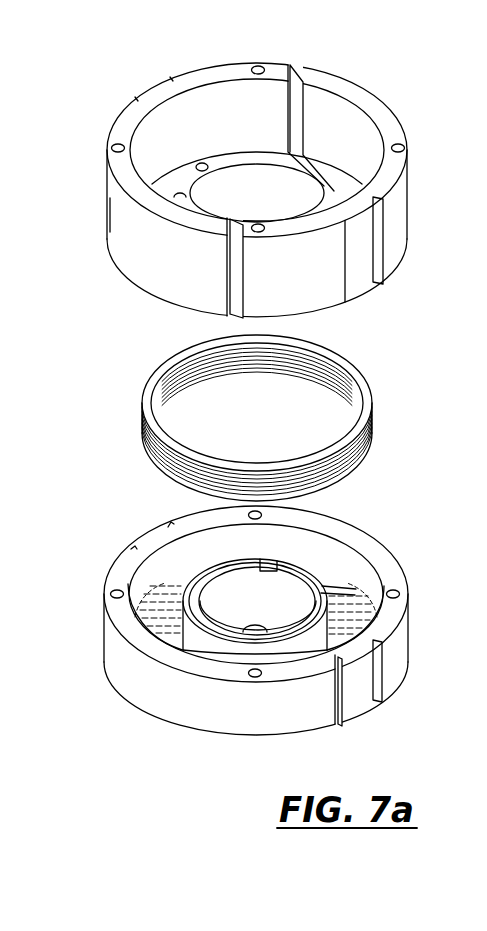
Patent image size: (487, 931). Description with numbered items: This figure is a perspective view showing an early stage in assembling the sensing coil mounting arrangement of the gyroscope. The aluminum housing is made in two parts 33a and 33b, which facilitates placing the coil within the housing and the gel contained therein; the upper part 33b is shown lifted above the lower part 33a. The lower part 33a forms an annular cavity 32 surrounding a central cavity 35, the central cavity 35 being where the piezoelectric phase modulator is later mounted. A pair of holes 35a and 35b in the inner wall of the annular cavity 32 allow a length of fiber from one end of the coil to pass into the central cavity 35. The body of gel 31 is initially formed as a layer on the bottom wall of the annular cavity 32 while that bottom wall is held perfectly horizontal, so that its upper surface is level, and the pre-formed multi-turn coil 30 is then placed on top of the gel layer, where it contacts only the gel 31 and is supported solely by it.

The multi-turn coil 30 is at (365, 380).
The body of gel 31 is at (170, 635).
The annular cavity 32 is at (275, 630).
The housing part 33a is at (223, 723).
The housing part 33b is at (396, 108).
The central cavity 35 is at (223, 590).
The hole 35a is at (270, 556).
The hole 35b is at (322, 597).